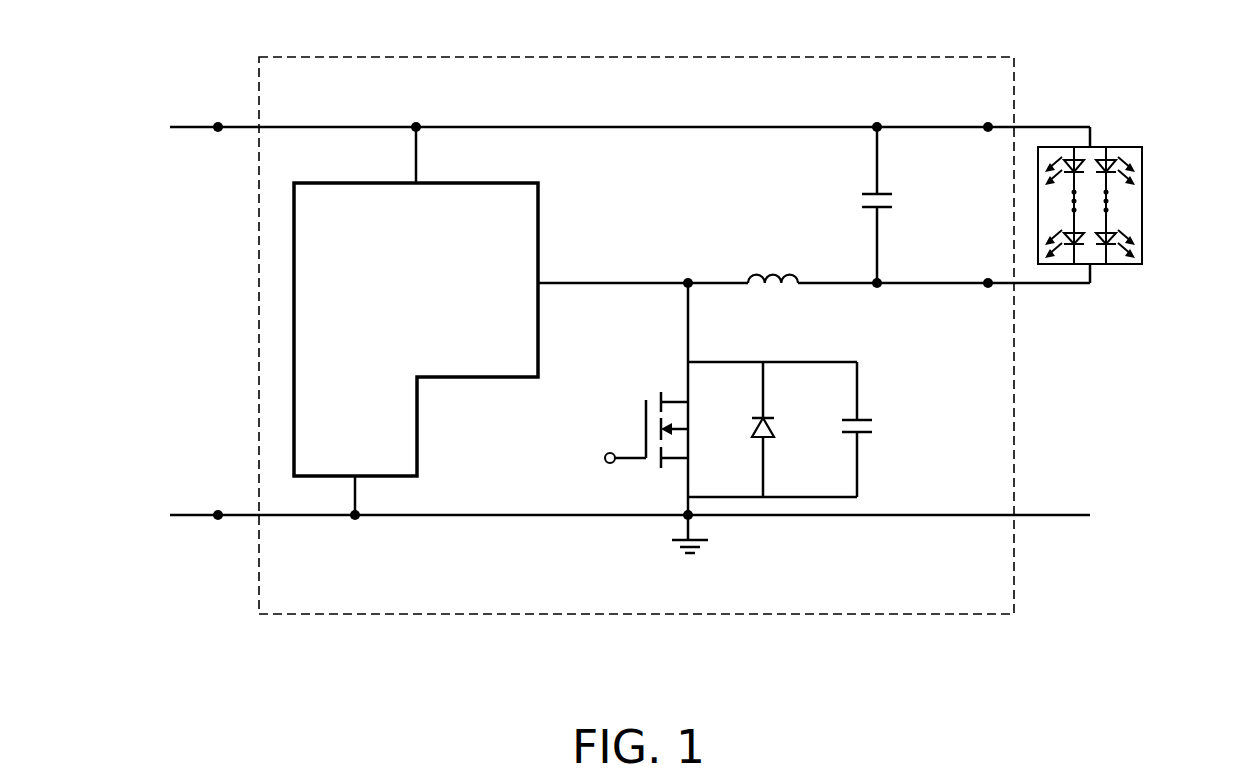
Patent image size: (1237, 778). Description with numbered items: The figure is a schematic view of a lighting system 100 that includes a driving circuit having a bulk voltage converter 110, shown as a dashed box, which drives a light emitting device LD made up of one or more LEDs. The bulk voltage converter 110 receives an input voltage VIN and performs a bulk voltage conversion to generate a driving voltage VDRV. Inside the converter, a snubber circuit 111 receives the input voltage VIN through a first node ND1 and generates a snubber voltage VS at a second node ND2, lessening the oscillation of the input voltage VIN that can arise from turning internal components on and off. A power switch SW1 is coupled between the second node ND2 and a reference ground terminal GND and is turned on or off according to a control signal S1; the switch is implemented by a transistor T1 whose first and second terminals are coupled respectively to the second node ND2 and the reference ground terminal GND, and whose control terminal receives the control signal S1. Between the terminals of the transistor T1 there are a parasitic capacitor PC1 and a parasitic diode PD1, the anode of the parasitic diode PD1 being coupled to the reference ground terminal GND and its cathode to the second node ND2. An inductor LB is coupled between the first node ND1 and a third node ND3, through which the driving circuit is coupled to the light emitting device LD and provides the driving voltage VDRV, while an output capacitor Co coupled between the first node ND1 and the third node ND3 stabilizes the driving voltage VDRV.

The lighting system 100 is at (1140, 674).
The bulk voltage converter 110 is at (858, 614).
The snubber circuit 111 is at (498, 183).
The input voltage VIN is at (218, 127).
The driving voltage VDRV is at (988, 127).
The light emitting device LD is at (1128, 148).
The first node ND1 is at (416, 127).
The second node ND2 is at (688, 281).
The third node ND3 is at (877, 287).
The snubber voltage VS is at (707, 322).
The inductor LB is at (773, 302).
The output capacitor Co is at (862, 202).
The power switch SW1 is at (716, 441).
The transistor T1 is at (673, 462).
The control signal S1 is at (610, 457).
The parasitic diode PD1 is at (785, 429).
The parasitic capacitor PC1 is at (881, 429).
The reference ground terminal GND is at (690, 554).